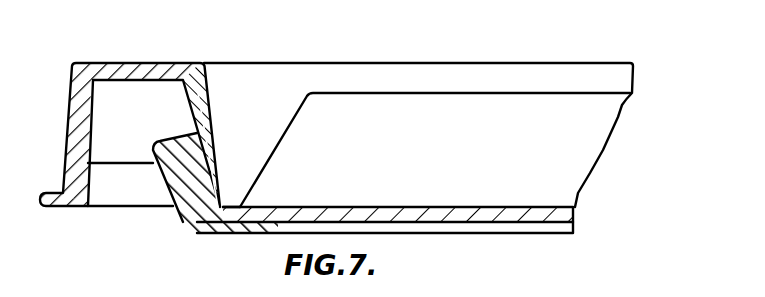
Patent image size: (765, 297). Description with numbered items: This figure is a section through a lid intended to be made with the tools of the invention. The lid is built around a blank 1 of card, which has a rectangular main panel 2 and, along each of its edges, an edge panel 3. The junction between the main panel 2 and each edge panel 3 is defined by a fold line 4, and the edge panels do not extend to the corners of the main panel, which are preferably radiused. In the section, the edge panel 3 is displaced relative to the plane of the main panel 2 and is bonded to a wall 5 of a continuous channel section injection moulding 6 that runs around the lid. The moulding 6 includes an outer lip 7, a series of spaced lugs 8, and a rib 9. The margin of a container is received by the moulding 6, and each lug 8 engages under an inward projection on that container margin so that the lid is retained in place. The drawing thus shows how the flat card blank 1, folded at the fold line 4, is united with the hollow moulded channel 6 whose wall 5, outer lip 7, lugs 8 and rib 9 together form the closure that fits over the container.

The blank 1 is at (405, 222).
The main panel 2 is at (317, 213).
The edge panel 3 is at (203, 122).
The fold line 4 is at (222, 208).
The wall 5 is at (191, 133).
The continuous channel section injection moulding 6 is at (144, 63).
The outer lip 7 is at (68, 135).
The lug 8 is at (160, 178).
The rib 9 is at (90, 176).